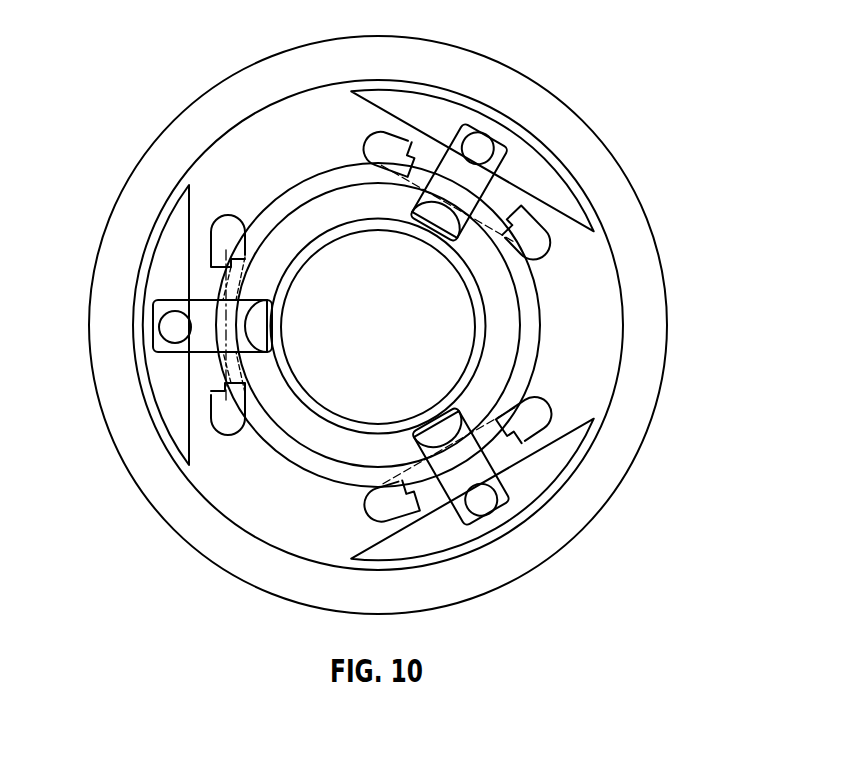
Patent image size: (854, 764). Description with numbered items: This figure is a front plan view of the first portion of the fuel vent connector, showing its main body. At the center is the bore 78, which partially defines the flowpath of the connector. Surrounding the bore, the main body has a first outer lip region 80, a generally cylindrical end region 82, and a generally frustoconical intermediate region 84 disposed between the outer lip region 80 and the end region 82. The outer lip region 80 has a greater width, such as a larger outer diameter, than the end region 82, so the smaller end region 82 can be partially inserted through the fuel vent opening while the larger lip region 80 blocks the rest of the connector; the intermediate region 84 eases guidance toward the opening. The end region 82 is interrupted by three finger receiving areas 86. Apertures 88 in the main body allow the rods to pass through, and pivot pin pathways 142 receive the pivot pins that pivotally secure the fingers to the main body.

The bore 78 is at (303, 270).
The first outer lip region 80 is at (642, 410).
The end region 82 is at (322, 210).
The intermediate region 84 is at (303, 545).
The finger receiving areas 86 is at (500, 185).
The apertures 88 is at (157, 328).
The pivot pin pathways 142 is at (225, 367).